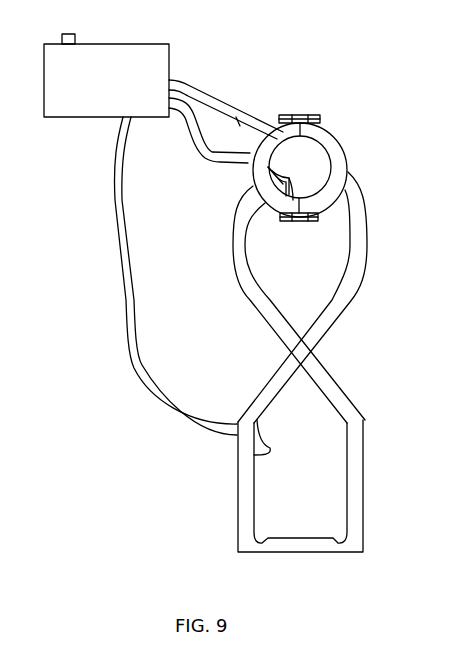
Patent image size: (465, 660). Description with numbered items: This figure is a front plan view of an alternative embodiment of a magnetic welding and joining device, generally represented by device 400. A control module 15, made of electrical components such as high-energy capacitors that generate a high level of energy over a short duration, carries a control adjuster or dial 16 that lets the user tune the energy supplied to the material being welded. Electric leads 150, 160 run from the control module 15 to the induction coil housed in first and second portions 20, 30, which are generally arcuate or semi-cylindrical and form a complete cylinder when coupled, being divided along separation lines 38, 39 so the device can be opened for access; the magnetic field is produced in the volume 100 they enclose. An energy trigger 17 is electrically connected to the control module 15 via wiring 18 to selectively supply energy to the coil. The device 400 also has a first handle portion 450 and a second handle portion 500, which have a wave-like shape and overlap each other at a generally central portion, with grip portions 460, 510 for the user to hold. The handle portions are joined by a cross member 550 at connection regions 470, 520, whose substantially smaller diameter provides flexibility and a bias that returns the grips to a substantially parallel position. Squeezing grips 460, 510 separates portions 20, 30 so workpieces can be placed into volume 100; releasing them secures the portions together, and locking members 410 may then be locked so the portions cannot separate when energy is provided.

The control module 15 is at (113, 53).
The control adjuster or dial 16 is at (72, 35).
The energy trigger 17 is at (268, 447).
The wiring 18 is at (206, 433).
The first portion 20 is at (262, 148).
The second portion 30 is at (338, 161).
The separation line 38 is at (322, 127).
The separation line 39 is at (296, 206).
The volume 100 is at (306, 164).
The electric lead 150 is at (258, 115).
The electric lead 160 is at (285, 181).
The device 400 is at (360, 105).
The locking member 410 is at (303, 117).
The first handle portion 450 is at (235, 251).
The grip portion 460 is at (355, 502).
The connection region 470 is at (362, 540).
The second handle portion 500 is at (362, 252).
The grip portion 510 is at (245, 506).
The connection region 520 is at (243, 545).
The cross member 550 is at (325, 553).